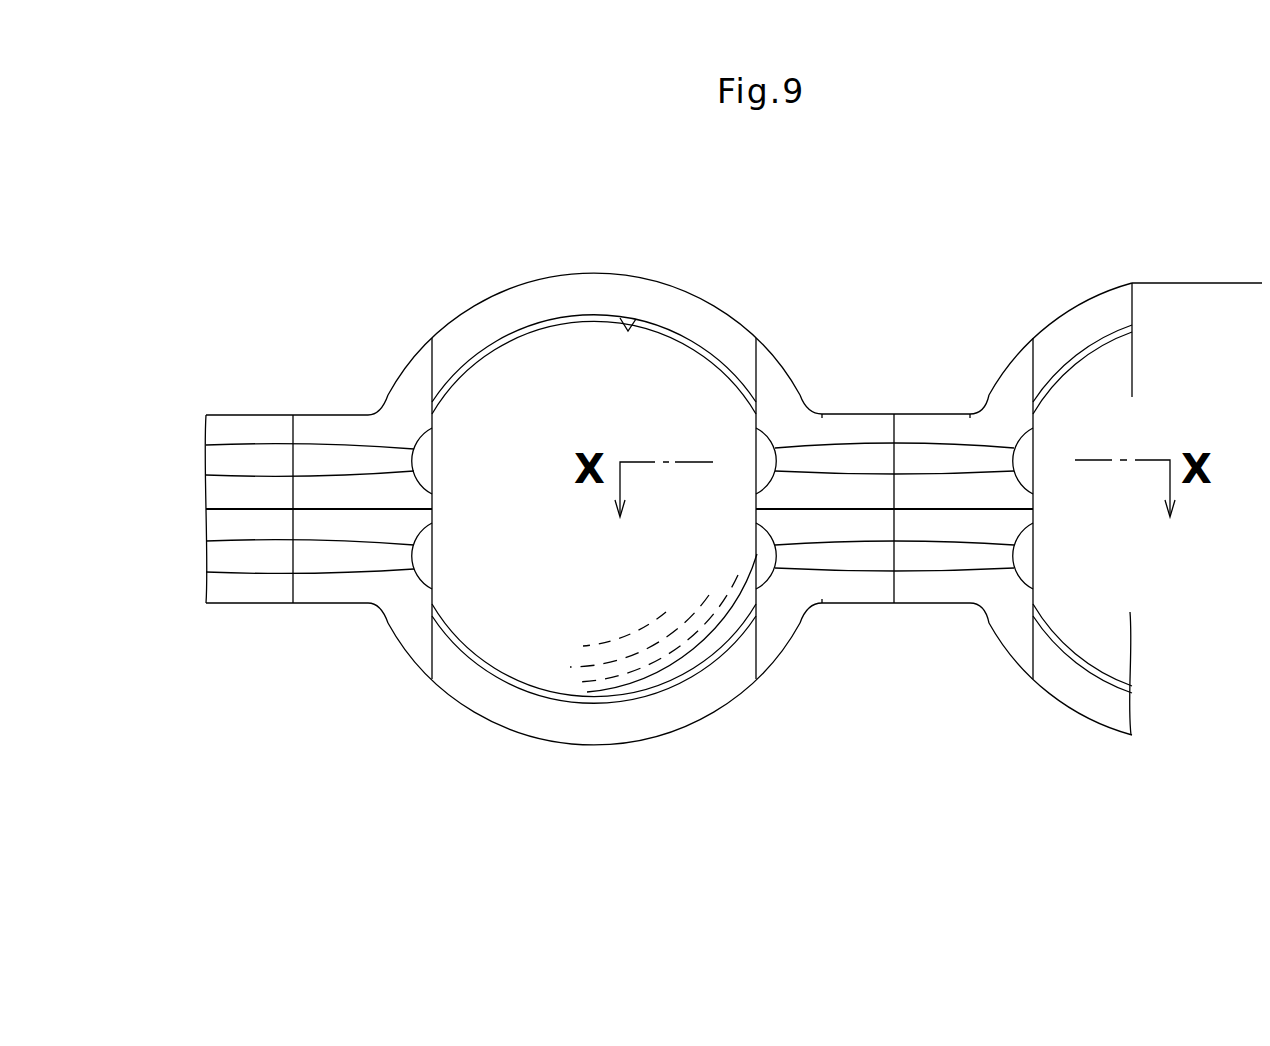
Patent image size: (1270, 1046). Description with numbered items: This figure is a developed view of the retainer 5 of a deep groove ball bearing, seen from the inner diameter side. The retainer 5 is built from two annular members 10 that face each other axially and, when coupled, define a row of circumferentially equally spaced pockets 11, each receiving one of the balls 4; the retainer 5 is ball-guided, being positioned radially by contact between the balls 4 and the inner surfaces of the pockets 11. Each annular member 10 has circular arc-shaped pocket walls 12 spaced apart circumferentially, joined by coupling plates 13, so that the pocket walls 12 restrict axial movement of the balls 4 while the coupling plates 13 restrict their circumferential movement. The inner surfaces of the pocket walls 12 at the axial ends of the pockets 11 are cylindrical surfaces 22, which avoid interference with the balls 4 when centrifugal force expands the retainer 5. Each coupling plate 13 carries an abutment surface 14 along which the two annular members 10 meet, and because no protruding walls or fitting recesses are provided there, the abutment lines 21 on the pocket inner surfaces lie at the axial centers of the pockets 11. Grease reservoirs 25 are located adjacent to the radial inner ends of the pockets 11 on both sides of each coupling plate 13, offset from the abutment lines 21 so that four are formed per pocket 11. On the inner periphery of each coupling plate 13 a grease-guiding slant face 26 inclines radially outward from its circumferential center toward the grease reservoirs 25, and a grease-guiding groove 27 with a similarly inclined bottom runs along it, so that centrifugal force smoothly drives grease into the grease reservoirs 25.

The ball 4 is at (488, 367).
The retainer 5 is at (236, 409).
The annular member 10 is at (222, 492).
The pocket 11 is at (563, 321).
The pocket wall 12 is at (591, 272).
The coupling plate 13 is at (908, 426).
The abutment surface 14 is at (860, 508).
The abutment line 21 is at (432, 509).
The cylindrical surface 22 is at (628, 328).
The grease reservoir 25 is at (430, 458).
The grease-guiding slant face 26 is at (820, 432).
The grease-guiding groove 27 is at (860, 462).